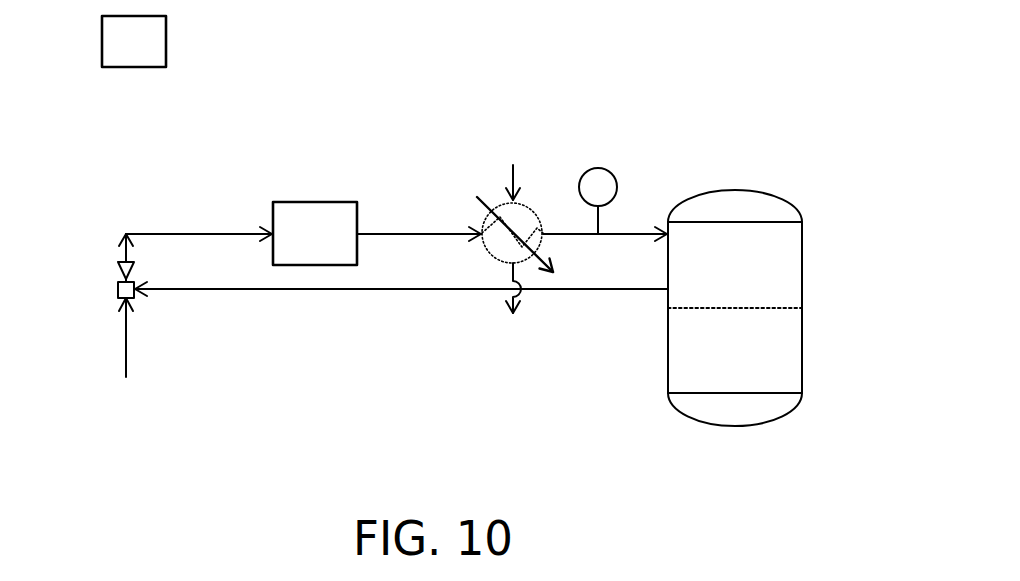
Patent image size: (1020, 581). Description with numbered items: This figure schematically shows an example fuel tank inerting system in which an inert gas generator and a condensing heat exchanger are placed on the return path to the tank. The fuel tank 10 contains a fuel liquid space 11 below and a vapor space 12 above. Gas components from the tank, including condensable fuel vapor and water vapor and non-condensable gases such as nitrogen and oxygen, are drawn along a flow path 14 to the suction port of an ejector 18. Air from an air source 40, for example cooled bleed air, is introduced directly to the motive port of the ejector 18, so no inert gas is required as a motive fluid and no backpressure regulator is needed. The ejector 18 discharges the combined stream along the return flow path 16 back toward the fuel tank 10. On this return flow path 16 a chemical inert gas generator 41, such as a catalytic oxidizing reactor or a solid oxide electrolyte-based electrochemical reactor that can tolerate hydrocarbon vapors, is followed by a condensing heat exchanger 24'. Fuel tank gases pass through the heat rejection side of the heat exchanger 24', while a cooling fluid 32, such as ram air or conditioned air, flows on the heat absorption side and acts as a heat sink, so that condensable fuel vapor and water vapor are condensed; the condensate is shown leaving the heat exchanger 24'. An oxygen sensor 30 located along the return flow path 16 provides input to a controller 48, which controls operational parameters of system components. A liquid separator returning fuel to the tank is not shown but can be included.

The controller 48 is at (166, 42).
The return flow path 16 is at (182, 234).
The chemical inert gas generator 41 is at (315, 202).
The ejector 18 is at (117, 282).
The air source 40 is at (125, 334).
The cooling fluid 32 is at (514, 180).
The condensing heat exchanger 24' is at (572, 295).
The oxygen sensor 30 is at (596, 168).
The flow path 14 is at (433, 290).
The fuel tank 10 is at (667, 347).
The vapor space 12 is at (787, 268).
The fuel liquid space 11 is at (787, 347).